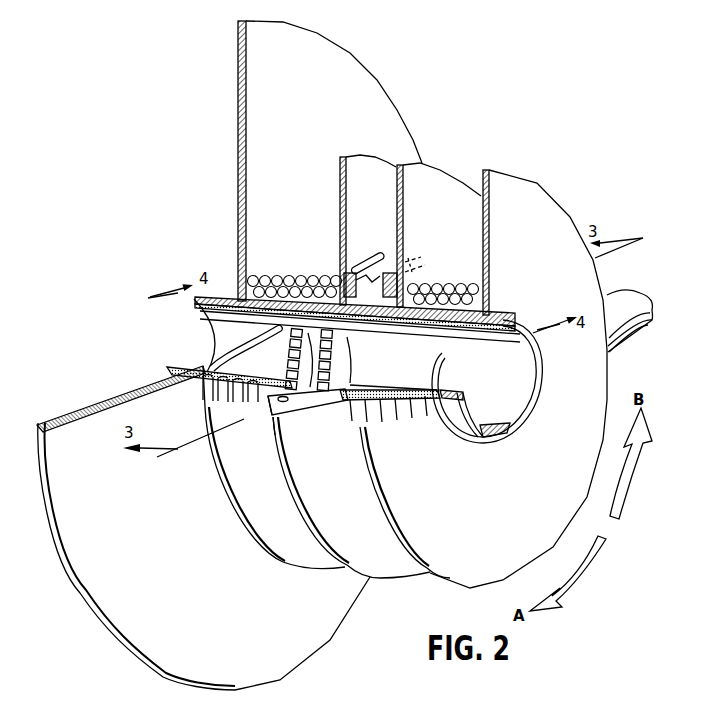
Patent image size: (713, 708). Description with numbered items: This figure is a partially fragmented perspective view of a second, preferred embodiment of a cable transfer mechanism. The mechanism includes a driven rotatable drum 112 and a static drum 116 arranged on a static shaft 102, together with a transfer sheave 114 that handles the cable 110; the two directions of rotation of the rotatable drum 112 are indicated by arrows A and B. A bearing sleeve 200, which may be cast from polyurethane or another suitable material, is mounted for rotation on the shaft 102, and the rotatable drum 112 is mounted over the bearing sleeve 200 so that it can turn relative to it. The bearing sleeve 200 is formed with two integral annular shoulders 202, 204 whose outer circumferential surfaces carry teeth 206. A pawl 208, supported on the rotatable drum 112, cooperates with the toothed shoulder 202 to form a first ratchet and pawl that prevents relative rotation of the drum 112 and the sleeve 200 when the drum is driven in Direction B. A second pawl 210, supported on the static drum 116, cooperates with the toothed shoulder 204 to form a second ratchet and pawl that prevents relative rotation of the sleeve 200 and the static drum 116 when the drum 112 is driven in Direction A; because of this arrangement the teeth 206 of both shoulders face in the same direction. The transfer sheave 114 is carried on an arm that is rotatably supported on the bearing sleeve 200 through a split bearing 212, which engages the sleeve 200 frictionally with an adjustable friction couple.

The shaft 102 is at (520, 394).
The cable 110 is at (263, 277).
The driven rotatable drum 112 is at (437, 587).
The transfer sheave 114 is at (635, 307).
The static drum 116 is at (175, 405).
The bearing sleeve 200 is at (493, 310).
The annular shoulder 202 is at (408, 278).
The annular shoulder 204 is at (350, 273).
The teeth 206 is at (345, 366).
The pawl 208 is at (425, 262).
The pawl 210 is at (380, 258).
The split bearing 212 is at (300, 413).